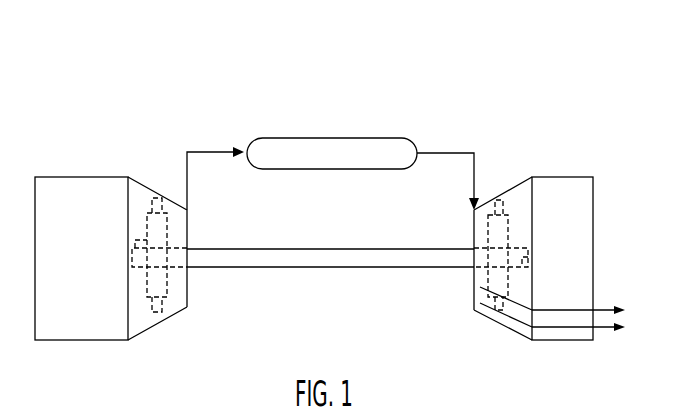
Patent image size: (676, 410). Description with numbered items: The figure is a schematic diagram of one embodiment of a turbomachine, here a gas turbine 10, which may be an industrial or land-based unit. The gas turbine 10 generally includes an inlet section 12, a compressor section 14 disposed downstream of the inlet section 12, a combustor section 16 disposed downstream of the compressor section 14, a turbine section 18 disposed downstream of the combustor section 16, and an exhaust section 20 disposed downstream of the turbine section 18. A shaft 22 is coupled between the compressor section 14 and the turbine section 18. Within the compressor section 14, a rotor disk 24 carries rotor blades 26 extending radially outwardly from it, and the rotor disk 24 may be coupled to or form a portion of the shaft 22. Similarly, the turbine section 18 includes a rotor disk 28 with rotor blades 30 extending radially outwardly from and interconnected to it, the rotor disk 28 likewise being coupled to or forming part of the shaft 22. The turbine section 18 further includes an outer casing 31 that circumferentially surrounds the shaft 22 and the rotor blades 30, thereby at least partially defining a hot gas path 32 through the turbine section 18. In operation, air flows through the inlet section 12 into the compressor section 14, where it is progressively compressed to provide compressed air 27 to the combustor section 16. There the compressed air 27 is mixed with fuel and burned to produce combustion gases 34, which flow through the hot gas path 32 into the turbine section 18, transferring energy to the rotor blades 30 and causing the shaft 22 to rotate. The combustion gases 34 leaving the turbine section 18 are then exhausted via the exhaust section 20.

The gas turbine 10 is at (196, 72).
The inlet section 12 is at (67, 177).
The compressor section 14 is at (148, 186).
The combustor section 16 is at (371, 138).
The turbine section 18 is at (518, 183).
The exhaust section 20 is at (570, 177).
The shaft 22 is at (302, 268).
The rotor disk 24 is at (132, 249).
The rotor blades 26 is at (147, 215).
The compressed air 27 is at (208, 152).
The rotor disk 28 is at (488, 215).
The rotor blades 30 is at (500, 197).
The outer casing 31 is at (527, 338).
The hot gas path 32 is at (494, 326).
The combustion gases 34 is at (433, 153).